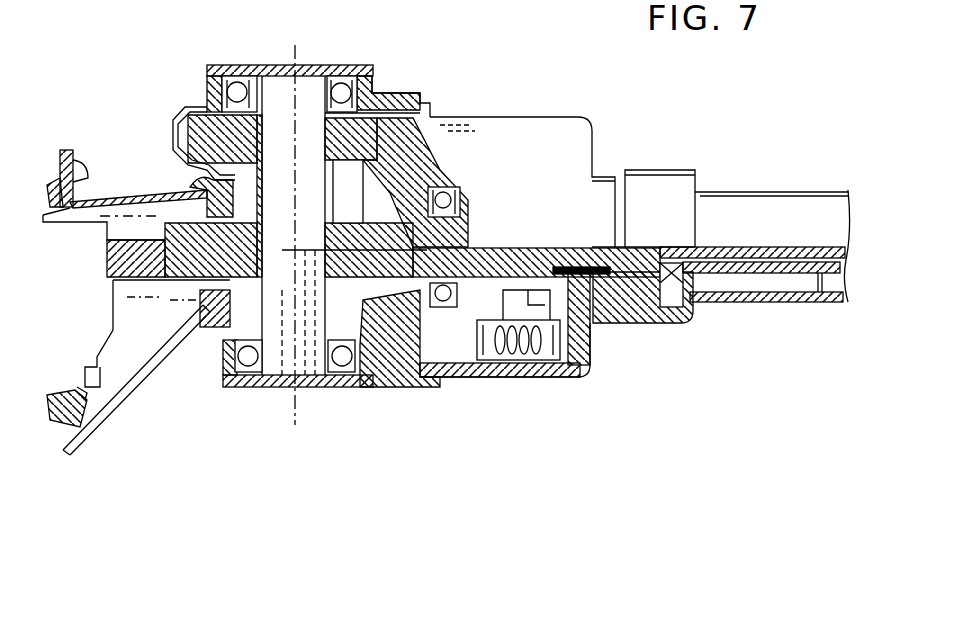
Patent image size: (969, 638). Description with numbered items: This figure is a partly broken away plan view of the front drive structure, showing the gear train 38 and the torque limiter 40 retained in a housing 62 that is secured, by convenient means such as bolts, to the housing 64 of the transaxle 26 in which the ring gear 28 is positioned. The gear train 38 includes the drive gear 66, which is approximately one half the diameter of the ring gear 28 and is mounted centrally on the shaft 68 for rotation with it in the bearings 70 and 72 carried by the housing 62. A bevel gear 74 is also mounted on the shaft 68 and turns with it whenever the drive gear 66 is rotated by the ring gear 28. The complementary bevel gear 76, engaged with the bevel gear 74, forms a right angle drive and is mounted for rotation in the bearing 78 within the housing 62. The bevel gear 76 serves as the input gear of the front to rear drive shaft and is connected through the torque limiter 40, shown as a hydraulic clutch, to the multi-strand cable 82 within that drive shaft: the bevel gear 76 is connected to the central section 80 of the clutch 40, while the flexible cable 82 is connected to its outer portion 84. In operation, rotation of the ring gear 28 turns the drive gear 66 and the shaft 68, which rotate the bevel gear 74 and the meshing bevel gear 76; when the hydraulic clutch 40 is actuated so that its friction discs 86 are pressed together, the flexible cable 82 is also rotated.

The transaxle 26 is at (93, 400).
The ring gear 28 is at (170, 240).
The gear train 38 is at (385, 95).
The torque limiter 40 is at (528, 357).
The housing 62 is at (480, 117).
The housing 64 is at (107, 400).
The drive gear 66 is at (220, 287).
The shaft 68 is at (278, 367).
The bearing 70 is at (338, 383).
The bearing 72 is at (232, 78).
The bevel gear 74 is at (200, 108).
The complementary bevel gear 76 is at (410, 375).
The bearing 78 is at (447, 177).
The central section 80 is at (485, 260).
The multi-strand cable 82 is at (832, 298).
The outer portion 84 is at (577, 377).
The friction discs 86 is at (500, 360).